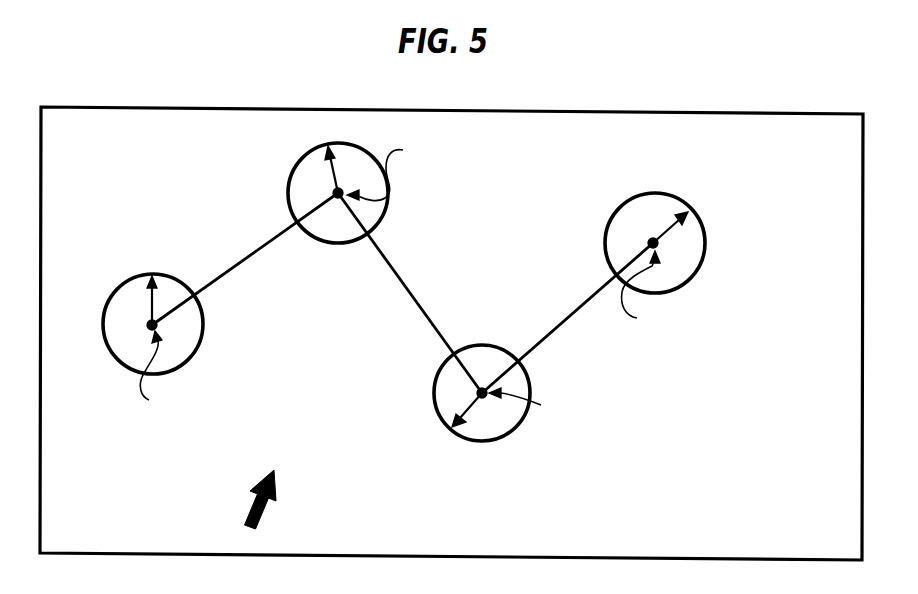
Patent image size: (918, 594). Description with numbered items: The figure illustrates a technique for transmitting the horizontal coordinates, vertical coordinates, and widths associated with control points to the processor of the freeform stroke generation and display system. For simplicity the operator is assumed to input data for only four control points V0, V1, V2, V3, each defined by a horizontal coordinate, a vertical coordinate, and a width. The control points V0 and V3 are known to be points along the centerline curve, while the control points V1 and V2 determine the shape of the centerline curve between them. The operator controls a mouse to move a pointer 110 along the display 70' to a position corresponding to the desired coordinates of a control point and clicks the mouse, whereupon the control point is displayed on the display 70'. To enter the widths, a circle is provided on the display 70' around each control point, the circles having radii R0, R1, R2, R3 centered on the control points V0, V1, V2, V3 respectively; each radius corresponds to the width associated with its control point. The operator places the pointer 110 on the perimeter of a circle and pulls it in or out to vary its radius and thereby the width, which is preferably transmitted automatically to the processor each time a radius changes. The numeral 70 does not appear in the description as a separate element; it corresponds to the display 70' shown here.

The display 70' is at (451, 313).
The display window / screen area 70 is at (451, 313).
The pointer 110 is at (262, 521).
The radius R0 is at (153, 324).
The radius R1 is at (338, 193).
The radius R2 is at (482, 393).
The radius R3 is at (655, 243).
The control point V0 is at (252, 370).
The control point V1 is at (482, 171).
The control point V2 is at (623, 403).
The control point V3 is at (737, 290).